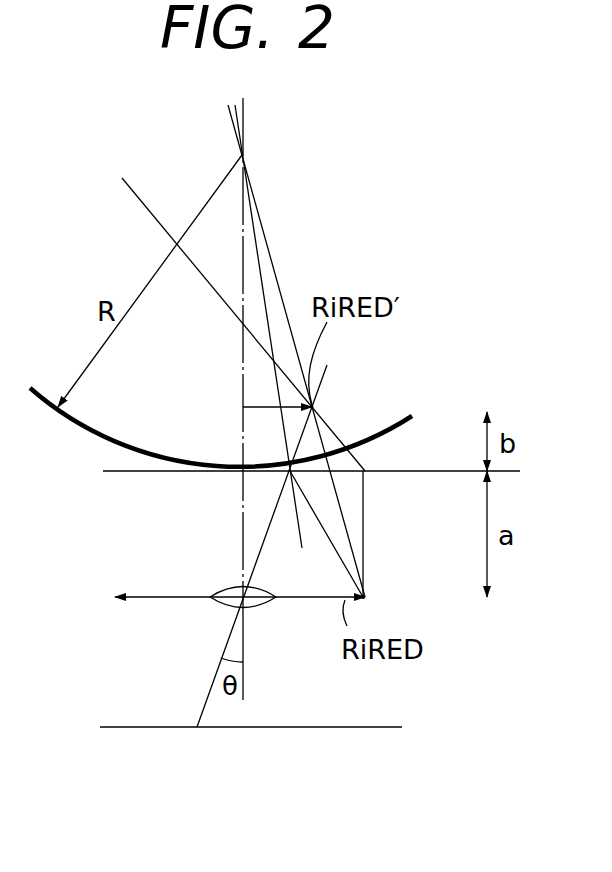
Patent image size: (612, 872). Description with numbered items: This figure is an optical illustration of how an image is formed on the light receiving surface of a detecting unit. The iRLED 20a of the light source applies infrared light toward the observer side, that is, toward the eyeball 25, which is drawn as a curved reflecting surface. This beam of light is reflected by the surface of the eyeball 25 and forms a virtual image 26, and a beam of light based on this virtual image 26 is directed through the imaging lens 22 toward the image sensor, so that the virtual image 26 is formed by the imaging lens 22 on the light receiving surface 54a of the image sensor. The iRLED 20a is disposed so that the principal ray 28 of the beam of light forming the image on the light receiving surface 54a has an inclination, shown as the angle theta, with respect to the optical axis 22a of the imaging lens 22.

The iRLED 20a is at (366, 594).
The imaging lens 22 is at (268, 605).
The optical axis 22a is at (242, 532).
The eyeball 25 is at (396, 425).
The virtual image 26 is at (315, 405).
The principal ray 28 is at (208, 688).
The light receiving surface 54a is at (330, 728).